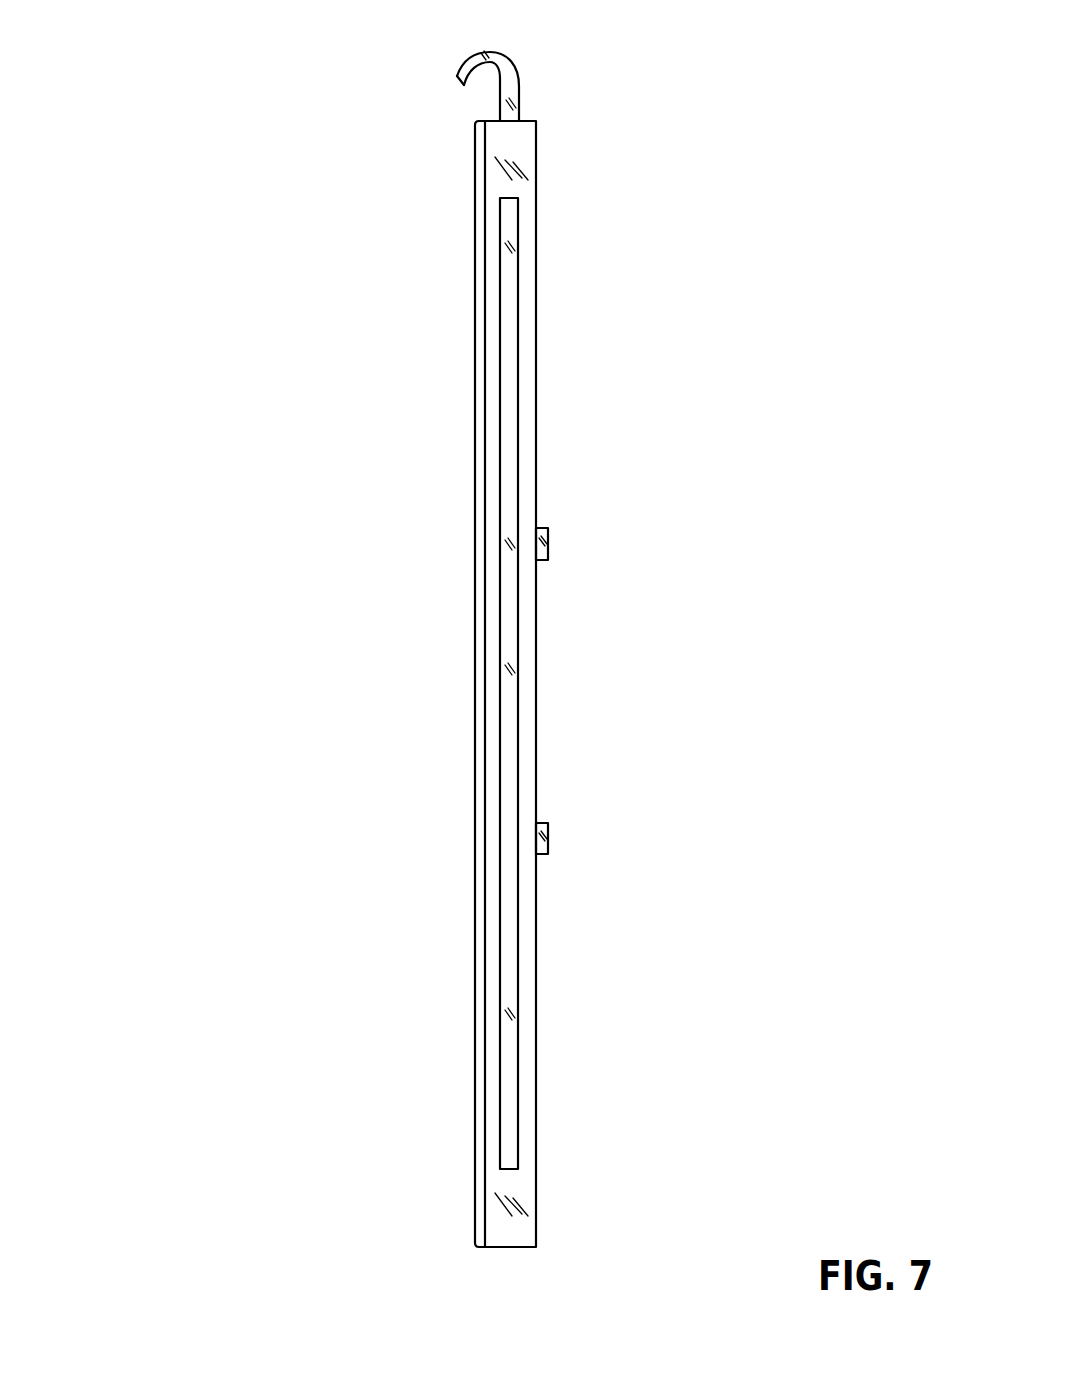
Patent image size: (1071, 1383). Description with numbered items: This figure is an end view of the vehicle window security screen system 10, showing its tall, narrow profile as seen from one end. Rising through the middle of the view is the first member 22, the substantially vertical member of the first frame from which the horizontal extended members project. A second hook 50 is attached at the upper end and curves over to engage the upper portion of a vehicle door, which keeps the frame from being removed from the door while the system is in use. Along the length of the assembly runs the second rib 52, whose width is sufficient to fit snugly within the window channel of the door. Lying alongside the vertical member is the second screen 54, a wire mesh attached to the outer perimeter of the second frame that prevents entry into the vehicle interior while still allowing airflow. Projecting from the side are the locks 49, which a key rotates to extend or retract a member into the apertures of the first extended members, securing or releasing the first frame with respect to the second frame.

The vehicle window security screen system 10 is at (214, 108).
The first member 22 is at (536, 257).
The lock 49 is at (548, 543).
The second hook 50 is at (517, 62).
The second rib 52 is at (506, 388).
The second screen 54 is at (475, 990).